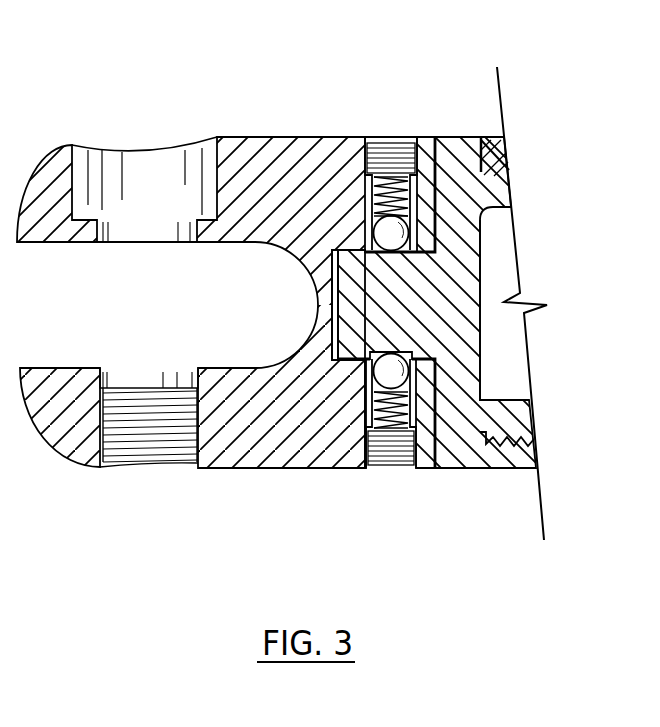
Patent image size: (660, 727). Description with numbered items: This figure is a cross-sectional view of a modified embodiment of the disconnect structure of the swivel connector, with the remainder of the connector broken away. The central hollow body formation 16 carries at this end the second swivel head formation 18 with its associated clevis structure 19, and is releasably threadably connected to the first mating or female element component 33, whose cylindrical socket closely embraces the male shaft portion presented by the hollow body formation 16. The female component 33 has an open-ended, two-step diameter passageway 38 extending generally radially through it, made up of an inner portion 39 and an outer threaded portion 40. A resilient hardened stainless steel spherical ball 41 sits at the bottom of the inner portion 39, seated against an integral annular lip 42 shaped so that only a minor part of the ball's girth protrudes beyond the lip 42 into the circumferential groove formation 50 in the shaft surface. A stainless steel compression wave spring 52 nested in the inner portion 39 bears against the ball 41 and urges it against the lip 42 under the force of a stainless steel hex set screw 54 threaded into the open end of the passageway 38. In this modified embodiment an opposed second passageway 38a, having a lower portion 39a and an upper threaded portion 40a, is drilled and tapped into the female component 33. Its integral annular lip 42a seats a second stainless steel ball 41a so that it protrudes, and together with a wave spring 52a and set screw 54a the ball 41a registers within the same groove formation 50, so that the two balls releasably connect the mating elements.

The central hollow body formation 16 is at (513, 468).
The second swivel head formation 18 is at (250, 122).
The clevis structure 19 is at (52, 436).
The first mating or female element component 33 is at (293, 148).
The passageway 38 is at (366, 428).
The second passageway 38a is at (382, 150).
The inner portion of passageway 39 is at (440, 412).
The lower portion of second passageway 39a is at (357, 200).
The outer threaded portion of passageway 40 is at (472, 467).
The upper threaded portion of second passageway 40a is at (445, 168).
The spherical ball 41 is at (405, 356).
The spherical ball 41a is at (398, 240).
The annular lip 42 is at (436, 390).
The annular lip 42a is at (436, 281).
The circumferential groove formation 50 is at (425, 352).
The spring 52 is at (362, 408).
The wave spring 52a is at (398, 192).
The hex set screw 54 is at (393, 468).
The set screw 54a is at (398, 137).